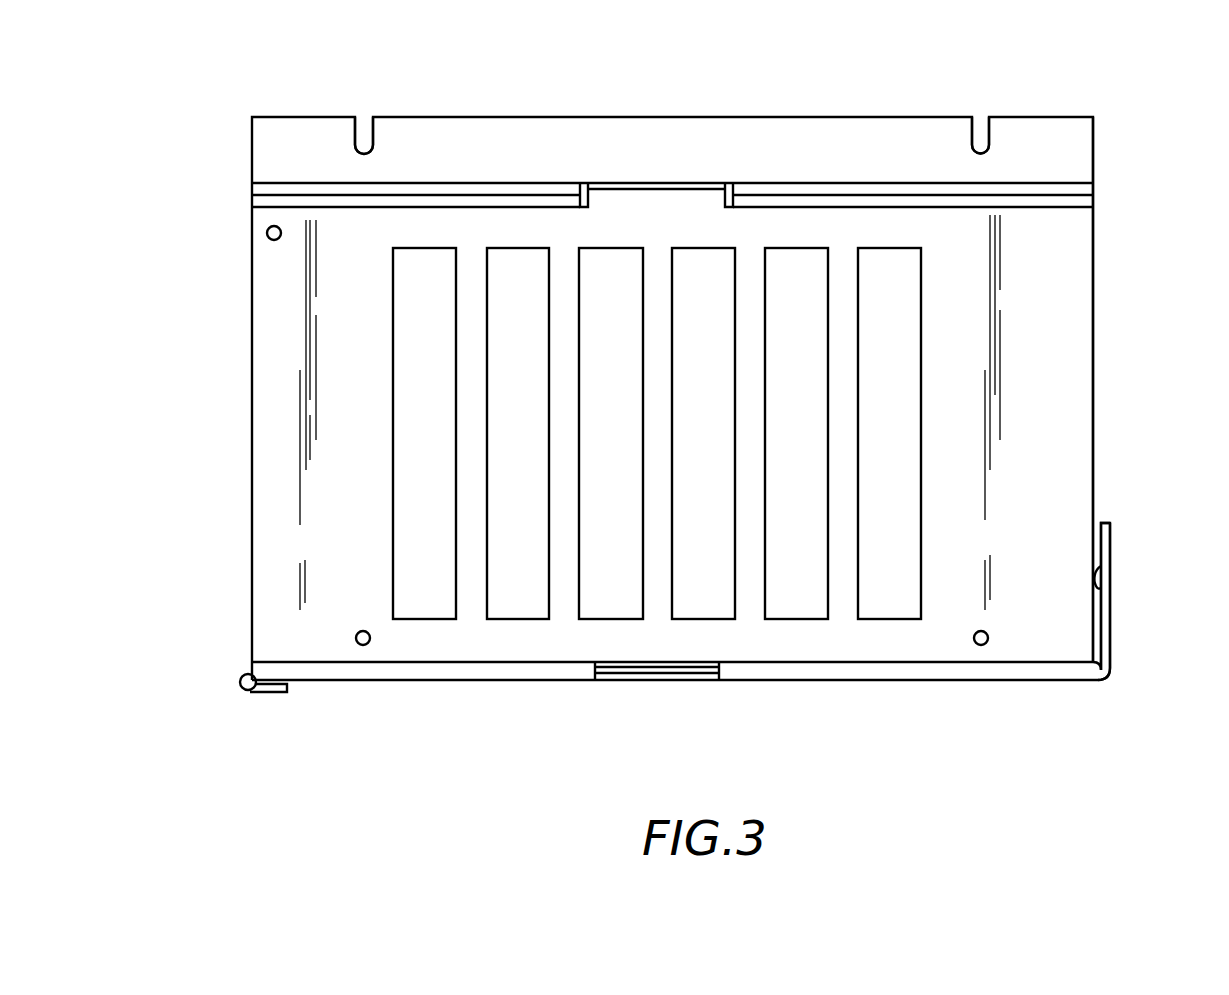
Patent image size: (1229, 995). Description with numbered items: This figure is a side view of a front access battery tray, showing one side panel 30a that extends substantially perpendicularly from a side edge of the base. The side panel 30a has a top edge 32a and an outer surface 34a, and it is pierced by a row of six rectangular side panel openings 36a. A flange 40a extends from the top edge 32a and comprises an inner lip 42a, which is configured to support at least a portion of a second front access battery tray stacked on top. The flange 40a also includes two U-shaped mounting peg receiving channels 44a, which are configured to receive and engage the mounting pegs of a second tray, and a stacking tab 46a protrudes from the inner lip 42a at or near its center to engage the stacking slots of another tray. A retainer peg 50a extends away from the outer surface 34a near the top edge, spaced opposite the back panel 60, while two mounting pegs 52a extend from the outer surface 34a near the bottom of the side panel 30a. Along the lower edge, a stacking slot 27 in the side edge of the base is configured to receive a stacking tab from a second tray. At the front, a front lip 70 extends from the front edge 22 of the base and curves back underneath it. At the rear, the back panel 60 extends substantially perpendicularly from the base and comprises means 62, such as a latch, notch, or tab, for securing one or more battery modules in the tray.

The front edge 22 is at (257, 693).
The stacking slot 27 is at (632, 682).
The side panel 30a is at (1093, 279).
The top edge 32a is at (1093, 207).
The outer surface 34a is at (1080, 423).
The side panel opening 36a is at (810, 612).
The flange 40a is at (612, 115).
The inner lip 42a is at (252, 192).
The mounting peg receiving channel 44a is at (364, 122).
The stacking tab 46a is at (675, 188).
The retainer peg 50a is at (263, 235).
The mounting peg 52a is at (361, 646).
The back panel 60 is at (1112, 603).
The means for securing battery modules 62 is at (1097, 584).
The front lip 70 is at (241, 688).